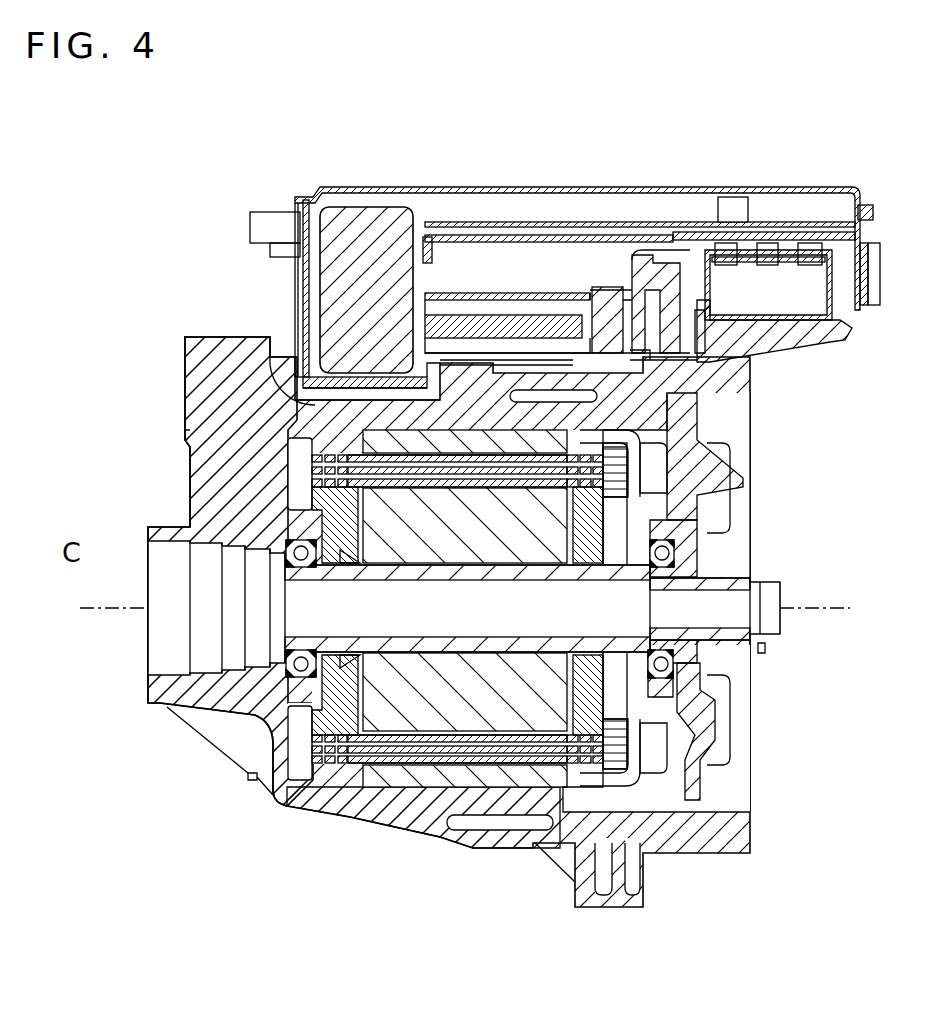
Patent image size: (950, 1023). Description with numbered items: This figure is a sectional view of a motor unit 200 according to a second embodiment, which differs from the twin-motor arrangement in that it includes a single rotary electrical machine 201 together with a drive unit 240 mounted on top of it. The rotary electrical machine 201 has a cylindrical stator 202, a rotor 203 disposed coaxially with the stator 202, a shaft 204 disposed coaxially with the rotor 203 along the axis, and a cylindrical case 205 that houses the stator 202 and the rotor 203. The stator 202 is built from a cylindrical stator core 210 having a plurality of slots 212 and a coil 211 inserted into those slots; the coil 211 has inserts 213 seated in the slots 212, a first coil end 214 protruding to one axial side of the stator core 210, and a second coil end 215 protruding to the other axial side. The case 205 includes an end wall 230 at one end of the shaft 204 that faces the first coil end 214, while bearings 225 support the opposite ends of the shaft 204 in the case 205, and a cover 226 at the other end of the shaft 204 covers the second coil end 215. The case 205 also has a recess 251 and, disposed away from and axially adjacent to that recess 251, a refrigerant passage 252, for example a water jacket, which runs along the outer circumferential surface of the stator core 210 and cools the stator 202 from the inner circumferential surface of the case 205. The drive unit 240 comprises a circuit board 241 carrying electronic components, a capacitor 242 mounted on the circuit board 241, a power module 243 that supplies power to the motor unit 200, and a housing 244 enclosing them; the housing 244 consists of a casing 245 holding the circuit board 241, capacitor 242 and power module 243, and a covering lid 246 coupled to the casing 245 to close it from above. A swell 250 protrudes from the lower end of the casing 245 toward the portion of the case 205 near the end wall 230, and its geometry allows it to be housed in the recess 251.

The motor unit 200 is at (894, 61).
The rotary electrical machine 201 is at (350, 838).
The stator 202 is at (403, 806).
The rotor 203 is at (447, 700).
The shaft 204 is at (765, 578).
The case 205 is at (383, 813).
The stator core 210 is at (588, 764).
The coil 211 is at (553, 780).
The slots 212 is at (522, 778).
The inserts 213 is at (427, 764).
The first coil end 214 is at (330, 764).
The second coil end 215 is at (660, 680).
The bearings 225 is at (292, 672).
The cover 226 is at (698, 757).
The end wall 230 is at (280, 750).
The drive unit 240 is at (471, 243).
The circuit board 241 is at (613, 227).
The capacitor 242 is at (368, 253).
The power module 243 is at (503, 327).
The housing 244 is at (461, 260).
The casing 245 is at (308, 282).
The covering lid 246 is at (325, 190).
The swell 250 is at (340, 405).
The recess 251 is at (313, 400).
The refrigerant passage 252 is at (562, 397).